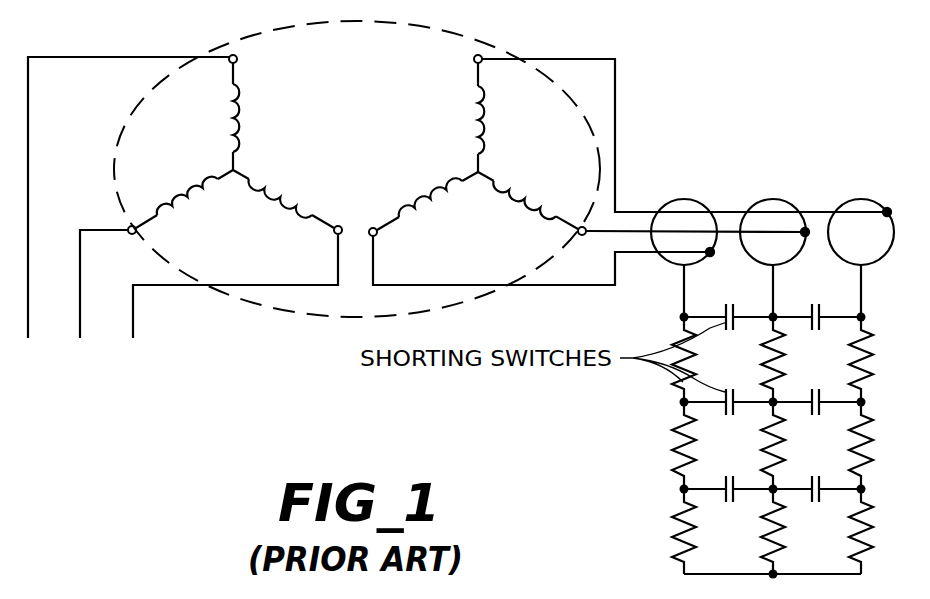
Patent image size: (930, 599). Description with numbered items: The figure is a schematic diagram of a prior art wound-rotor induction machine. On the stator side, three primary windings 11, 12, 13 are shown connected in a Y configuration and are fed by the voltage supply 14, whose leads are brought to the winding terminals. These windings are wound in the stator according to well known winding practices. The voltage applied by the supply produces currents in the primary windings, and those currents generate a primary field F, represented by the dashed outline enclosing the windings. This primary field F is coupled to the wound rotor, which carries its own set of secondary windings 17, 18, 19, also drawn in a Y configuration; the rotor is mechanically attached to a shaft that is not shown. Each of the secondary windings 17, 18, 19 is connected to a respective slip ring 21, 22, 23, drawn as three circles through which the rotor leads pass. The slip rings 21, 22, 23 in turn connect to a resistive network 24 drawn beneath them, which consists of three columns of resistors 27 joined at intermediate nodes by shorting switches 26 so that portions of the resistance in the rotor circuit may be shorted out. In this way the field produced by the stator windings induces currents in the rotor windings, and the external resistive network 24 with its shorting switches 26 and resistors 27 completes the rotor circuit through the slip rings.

The primary field F is at (378, 38).
The primary winding 11 is at (240, 112).
The primary winding 12 is at (191, 192).
The primary winding 13 is at (277, 208).
The voltage supply 14 is at (137, 342).
The rotor winding 17 is at (475, 118).
The rotor winding 18 is at (426, 204).
The rotor winding 19 is at (530, 198).
The slip ring 21 is at (679, 198).
The slip ring 22 is at (768, 198).
The slip ring 23 is at (856, 198).
The resistive network 24 is at (719, 422).
The shorting switches 26 is at (724, 484).
The resistors 27 is at (857, 438).